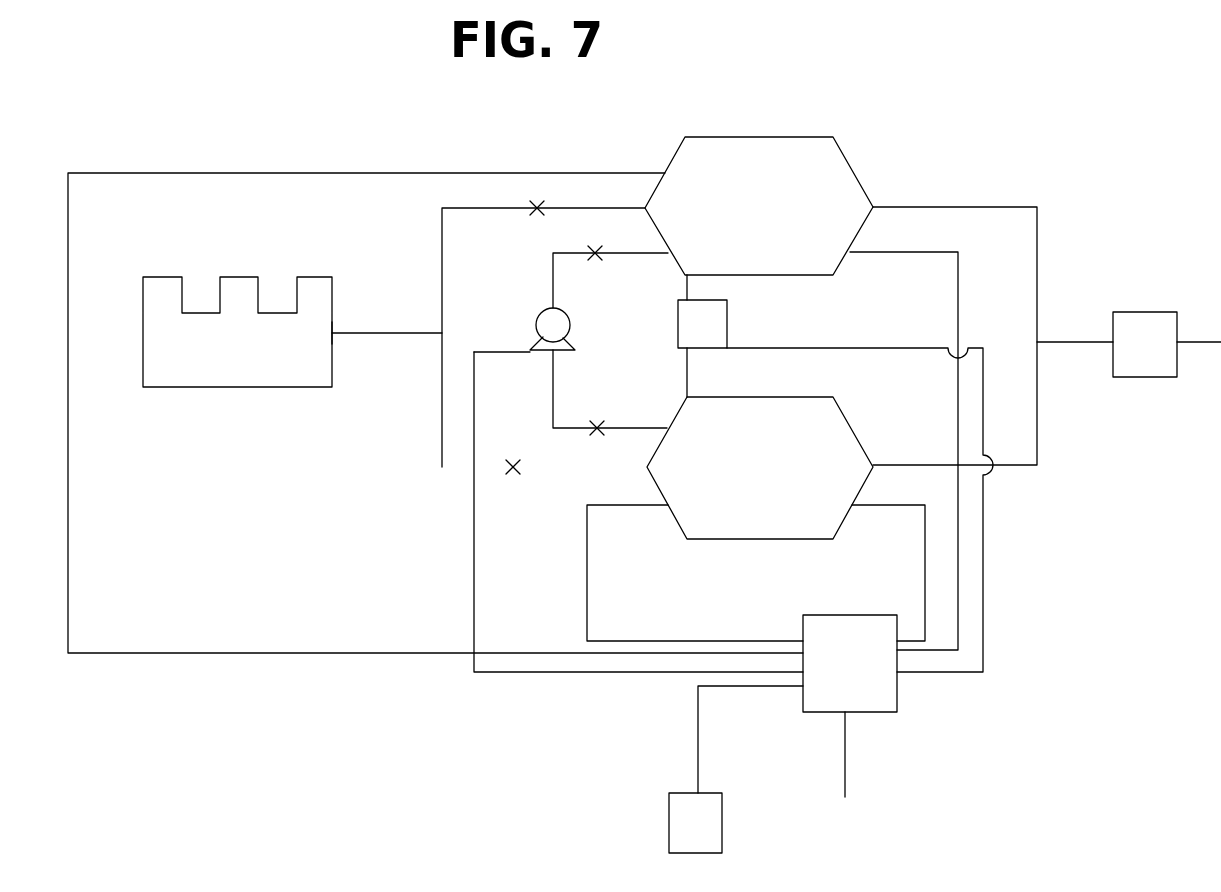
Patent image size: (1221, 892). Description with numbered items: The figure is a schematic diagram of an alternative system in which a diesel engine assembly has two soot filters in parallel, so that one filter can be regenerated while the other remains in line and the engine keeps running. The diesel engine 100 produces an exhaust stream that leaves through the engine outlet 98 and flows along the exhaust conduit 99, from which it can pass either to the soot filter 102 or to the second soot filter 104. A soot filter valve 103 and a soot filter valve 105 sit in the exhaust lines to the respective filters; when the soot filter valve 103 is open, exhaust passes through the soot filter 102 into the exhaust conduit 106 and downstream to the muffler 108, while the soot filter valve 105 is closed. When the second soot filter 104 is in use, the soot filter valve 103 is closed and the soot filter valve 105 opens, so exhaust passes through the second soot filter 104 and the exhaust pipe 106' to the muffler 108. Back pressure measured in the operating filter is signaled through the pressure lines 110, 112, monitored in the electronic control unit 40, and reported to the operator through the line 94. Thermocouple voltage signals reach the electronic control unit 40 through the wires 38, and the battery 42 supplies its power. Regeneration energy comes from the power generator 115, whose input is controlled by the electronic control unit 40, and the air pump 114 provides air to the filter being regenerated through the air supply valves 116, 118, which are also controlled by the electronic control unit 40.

The wires 38 is at (958, 325).
The electronic control unit 40 is at (897, 697).
The battery 42 is at (722, 823).
The line 94 is at (846, 757).
The engine outlet 98 is at (333, 331).
The exhaust conduit 99 is at (388, 335).
The diesel engine 100 is at (250, 388).
The soot filter 102 is at (757, 137).
The soot filter valve 103 is at (537, 208).
The second soot filter 104 is at (748, 397).
The soot filter valve 105 is at (513, 473).
The exhaust conduit 106 is at (1047, 312).
The exhaust pipe 106' is at (893, 510).
The muffler 108 is at (1140, 312).
The pressure line 110 is at (392, 173).
The pressure line 112 is at (653, 641).
The air pump 114 is at (575, 316).
The power generator 115 is at (727, 320).
The air supply valve 116 is at (600, 258).
The air supply valve 118 is at (599, 424).